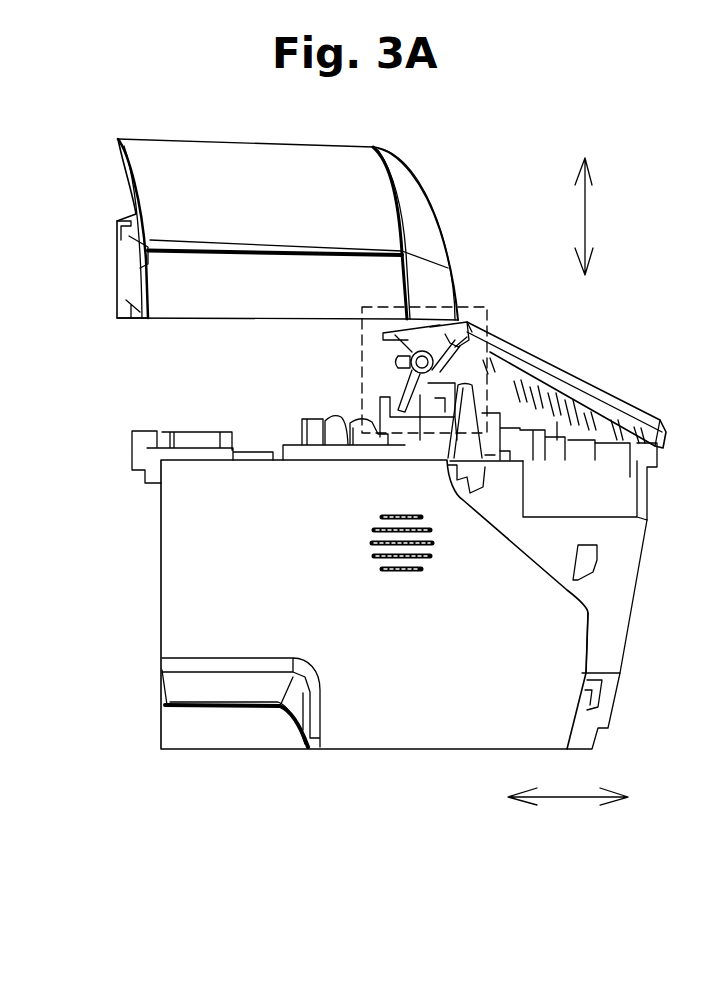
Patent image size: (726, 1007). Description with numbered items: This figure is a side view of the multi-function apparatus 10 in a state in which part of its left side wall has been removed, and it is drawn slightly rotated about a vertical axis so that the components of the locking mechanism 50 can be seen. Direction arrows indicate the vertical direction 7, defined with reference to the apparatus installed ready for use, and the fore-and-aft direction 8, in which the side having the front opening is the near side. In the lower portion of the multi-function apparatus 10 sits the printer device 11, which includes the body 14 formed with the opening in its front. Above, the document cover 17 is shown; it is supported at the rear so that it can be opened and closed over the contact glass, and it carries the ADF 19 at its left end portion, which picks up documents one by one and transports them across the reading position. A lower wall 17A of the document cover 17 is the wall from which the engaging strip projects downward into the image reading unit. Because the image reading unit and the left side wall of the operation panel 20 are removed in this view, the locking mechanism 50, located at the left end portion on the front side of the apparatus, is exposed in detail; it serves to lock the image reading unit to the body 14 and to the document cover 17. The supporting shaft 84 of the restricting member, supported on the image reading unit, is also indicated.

The vertical direction 7 is at (585, 215).
The fore-and-aft direction 8 is at (568, 797).
The multi-function apparatus 10 is at (423, 608).
The printer device 11 is at (637, 638).
The body 14 is at (560, 657).
The document cover 17 is at (314, 202).
The lower wall 17A is at (725, 233).
The ADF (Auto Document Feeder) 19 is at (178, 162).
The operation panel 20 is at (560, 370).
The locking mechanism 50 is at (362, 366).
The supporting shaft 84 is at (713, 268).